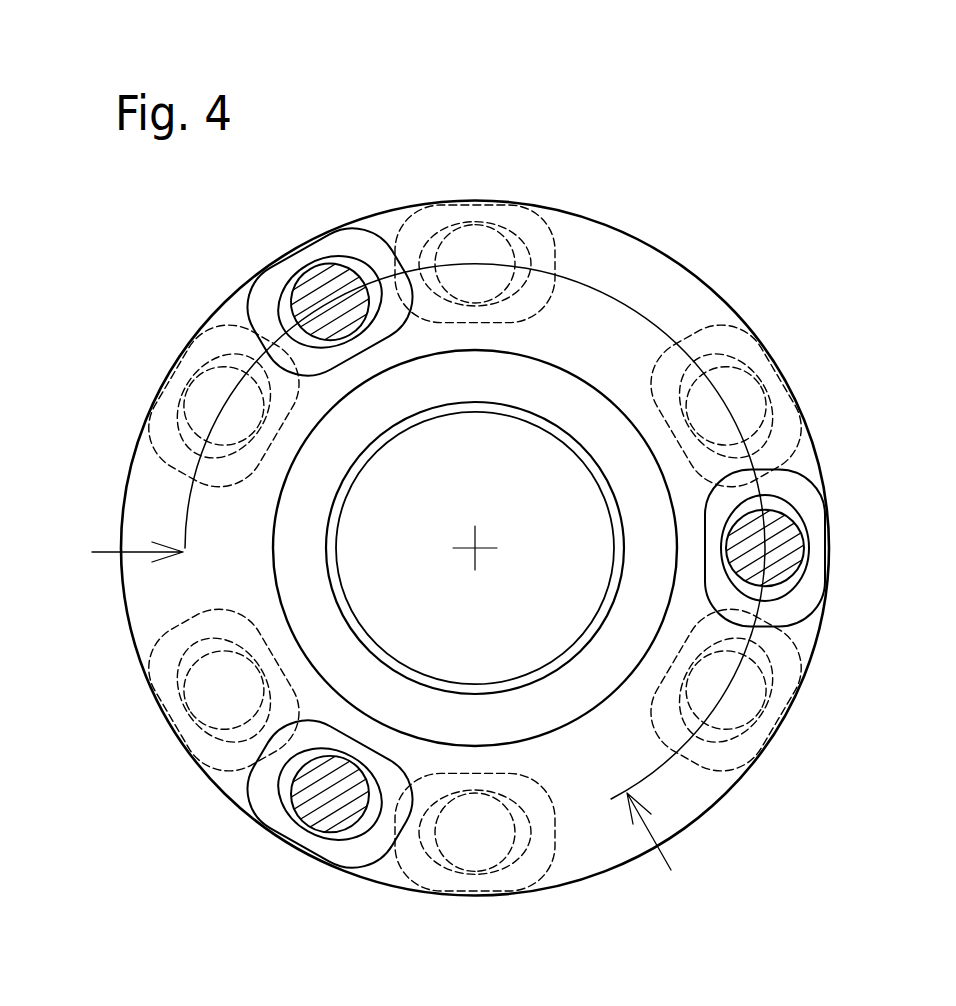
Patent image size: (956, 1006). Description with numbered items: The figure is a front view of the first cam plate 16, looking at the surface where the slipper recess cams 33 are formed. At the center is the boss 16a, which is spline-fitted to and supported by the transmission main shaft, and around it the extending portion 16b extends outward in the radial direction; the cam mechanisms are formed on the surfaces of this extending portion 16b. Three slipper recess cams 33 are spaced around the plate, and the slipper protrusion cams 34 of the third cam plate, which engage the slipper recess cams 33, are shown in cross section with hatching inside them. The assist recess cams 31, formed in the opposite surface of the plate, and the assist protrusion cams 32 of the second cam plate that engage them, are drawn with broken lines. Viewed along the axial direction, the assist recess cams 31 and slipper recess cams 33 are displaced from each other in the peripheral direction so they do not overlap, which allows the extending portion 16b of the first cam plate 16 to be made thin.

The first cam plate 16 is at (666, 171).
The boss 16a is at (578, 393).
The extending portion 16b is at (635, 262).
The assist recess cams 31 is at (422, 880).
The assist protrusion cams 32 is at (485, 827).
The slipper recess cams 33 is at (370, 823).
The slipper protrusion cams 34 is at (297, 817).